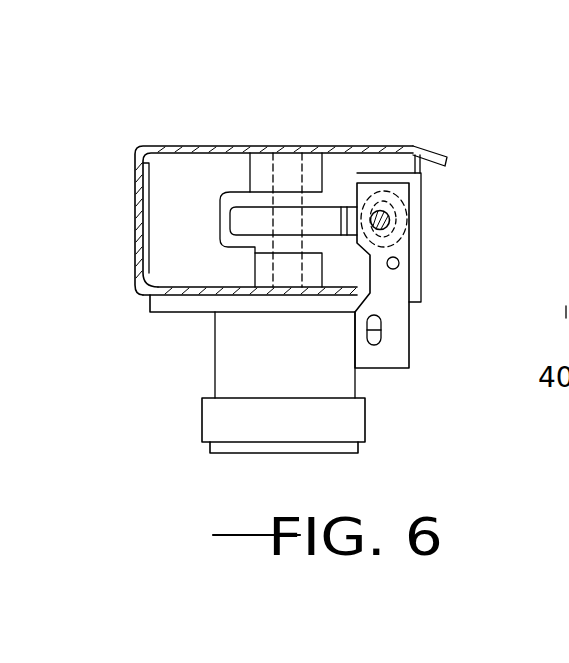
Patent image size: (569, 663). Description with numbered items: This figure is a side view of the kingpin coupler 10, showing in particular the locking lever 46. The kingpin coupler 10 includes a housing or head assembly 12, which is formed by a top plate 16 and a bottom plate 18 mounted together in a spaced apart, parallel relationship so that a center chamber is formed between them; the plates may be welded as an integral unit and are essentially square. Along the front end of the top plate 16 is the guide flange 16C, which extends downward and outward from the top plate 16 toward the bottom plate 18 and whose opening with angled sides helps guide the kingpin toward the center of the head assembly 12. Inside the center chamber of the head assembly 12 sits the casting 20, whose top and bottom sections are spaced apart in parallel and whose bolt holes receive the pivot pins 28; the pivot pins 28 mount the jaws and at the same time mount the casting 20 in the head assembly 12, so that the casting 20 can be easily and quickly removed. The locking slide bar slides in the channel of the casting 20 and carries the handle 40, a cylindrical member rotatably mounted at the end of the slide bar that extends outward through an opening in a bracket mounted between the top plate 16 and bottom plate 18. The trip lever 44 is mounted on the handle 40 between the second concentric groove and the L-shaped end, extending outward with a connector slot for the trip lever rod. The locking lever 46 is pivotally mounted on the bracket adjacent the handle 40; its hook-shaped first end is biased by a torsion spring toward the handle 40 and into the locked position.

The kingpin coupler 10 is at (268, 120).
The head assembly 12 is at (123, 190).
The top plate 16 is at (392, 145).
The guide flange 16C is at (441, 151).
The bottom plate 18 is at (188, 295).
The casting 20 is at (312, 162).
The pivot pins 28 is at (293, 147).
The handle 40 is at (392, 218).
The trip lever 44 is at (397, 346).
The locking lever 46 is at (362, 270).